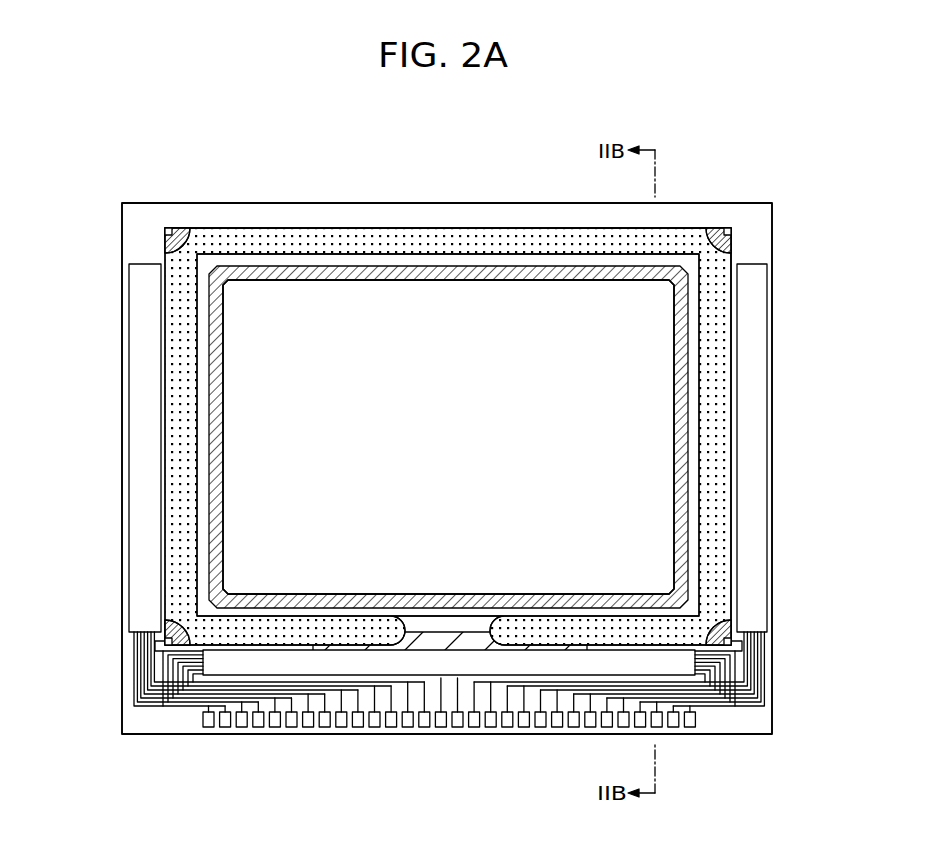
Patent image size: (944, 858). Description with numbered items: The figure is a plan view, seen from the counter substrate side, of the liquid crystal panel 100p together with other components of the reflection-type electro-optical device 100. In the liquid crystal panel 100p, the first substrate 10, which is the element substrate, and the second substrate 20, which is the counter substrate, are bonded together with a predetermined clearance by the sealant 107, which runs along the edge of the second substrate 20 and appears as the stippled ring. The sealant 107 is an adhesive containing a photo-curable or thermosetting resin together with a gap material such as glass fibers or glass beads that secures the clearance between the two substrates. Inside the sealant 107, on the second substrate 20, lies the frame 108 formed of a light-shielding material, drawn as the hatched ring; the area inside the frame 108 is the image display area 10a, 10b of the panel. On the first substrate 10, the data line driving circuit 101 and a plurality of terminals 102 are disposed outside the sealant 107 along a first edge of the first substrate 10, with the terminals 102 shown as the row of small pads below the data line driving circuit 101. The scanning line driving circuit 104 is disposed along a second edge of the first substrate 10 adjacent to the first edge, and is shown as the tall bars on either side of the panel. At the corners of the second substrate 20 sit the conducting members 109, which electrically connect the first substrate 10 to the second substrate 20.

The electro-optical device 100 is at (706, 112).
The liquid crystal panel 100p is at (684, 199).
The first substrate 10 is at (398, 203).
The image display area 10a is at (247, 375).
The display region 10b is at (448, 437).
The second substrate 20 is at (482, 228).
The data line driving circuit 101 is at (237, 668).
The terminals 102 is at (560, 722).
The scanning line driving circuit 104 is at (141, 423).
The sealant 107 is at (715, 378).
The frame 108 is at (680, 328).
The conducting member 109 is at (170, 232).